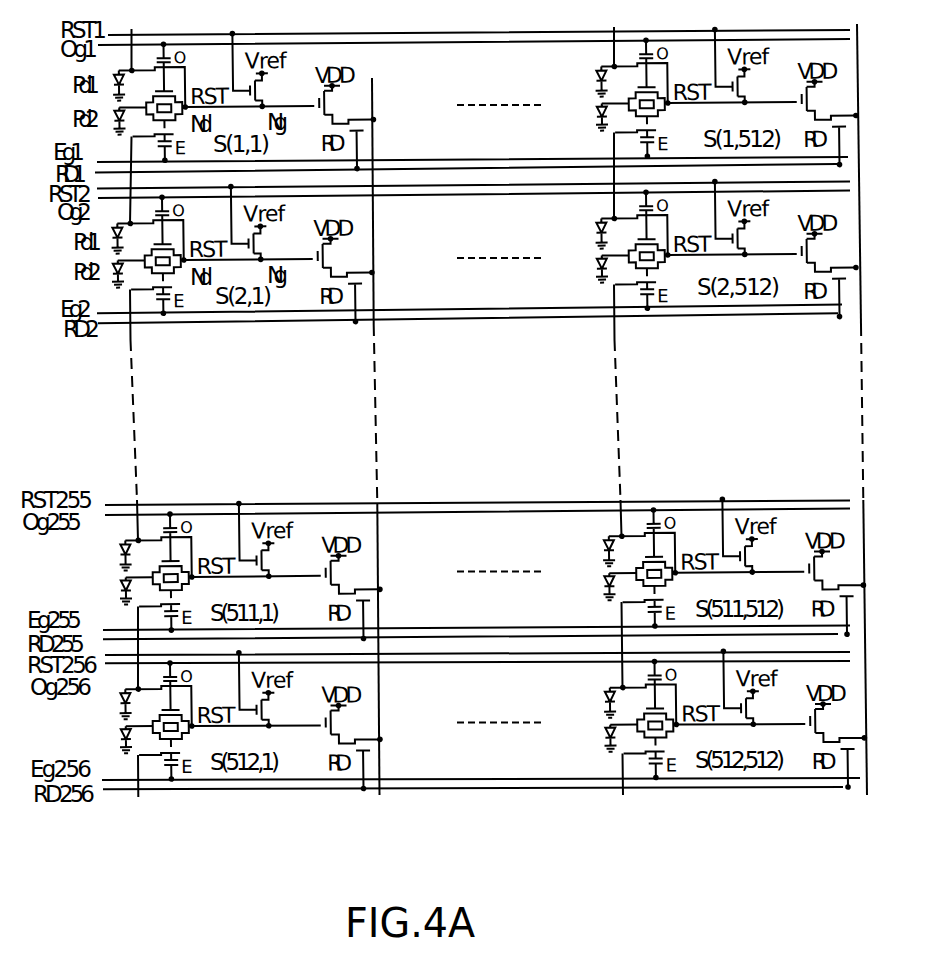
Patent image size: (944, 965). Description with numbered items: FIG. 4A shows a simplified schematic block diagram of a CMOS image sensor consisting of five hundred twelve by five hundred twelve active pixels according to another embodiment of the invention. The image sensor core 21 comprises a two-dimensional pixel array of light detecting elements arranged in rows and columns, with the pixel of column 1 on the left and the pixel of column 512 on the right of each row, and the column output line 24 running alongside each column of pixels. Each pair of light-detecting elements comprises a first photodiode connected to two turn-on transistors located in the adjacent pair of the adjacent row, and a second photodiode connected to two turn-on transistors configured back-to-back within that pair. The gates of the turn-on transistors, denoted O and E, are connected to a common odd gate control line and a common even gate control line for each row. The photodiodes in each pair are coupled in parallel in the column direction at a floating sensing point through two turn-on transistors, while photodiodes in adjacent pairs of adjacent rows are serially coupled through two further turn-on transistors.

The column output line 24 is at (374, 131).
The image sensor core 21 is at (735, 808).
The column 1 output line 1 is at (381, 669).
The column 512 output line 512 is at (864, 664).